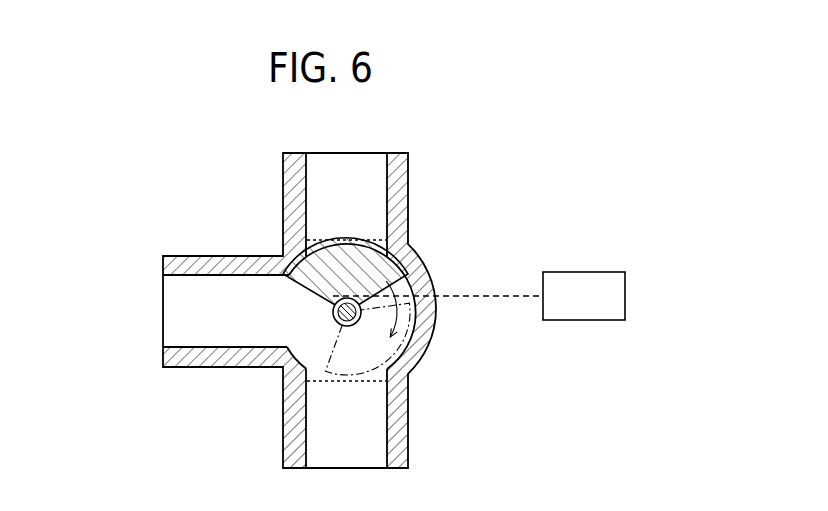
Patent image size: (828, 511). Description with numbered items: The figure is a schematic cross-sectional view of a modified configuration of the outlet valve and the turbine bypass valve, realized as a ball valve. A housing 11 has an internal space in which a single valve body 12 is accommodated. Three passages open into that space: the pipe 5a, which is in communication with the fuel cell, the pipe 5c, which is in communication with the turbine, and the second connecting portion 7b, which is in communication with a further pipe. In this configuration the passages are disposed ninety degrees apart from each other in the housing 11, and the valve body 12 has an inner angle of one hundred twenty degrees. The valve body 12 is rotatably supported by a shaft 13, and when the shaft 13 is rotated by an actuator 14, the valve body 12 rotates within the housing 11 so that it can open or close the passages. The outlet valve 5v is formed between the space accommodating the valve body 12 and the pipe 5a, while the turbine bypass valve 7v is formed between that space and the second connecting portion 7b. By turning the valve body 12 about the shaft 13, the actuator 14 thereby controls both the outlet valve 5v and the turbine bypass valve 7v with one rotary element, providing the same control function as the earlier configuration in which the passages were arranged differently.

The pipe 5a is at (343, 181).
The pipe 5c is at (197, 313).
The second connecting portion 7b is at (343, 452).
The outlet valve 5v is at (347, 240).
The turbine bypass valve 7v is at (347, 382).
The housing 11 is at (430, 306).
The valve body 12 is at (372, 273).
The shaft 13 is at (334, 316).
The actuator 14 is at (584, 321).